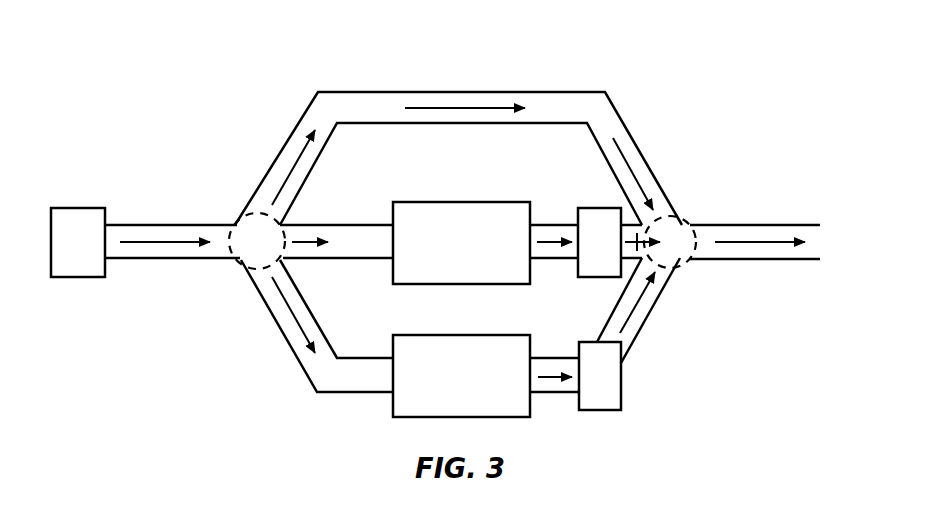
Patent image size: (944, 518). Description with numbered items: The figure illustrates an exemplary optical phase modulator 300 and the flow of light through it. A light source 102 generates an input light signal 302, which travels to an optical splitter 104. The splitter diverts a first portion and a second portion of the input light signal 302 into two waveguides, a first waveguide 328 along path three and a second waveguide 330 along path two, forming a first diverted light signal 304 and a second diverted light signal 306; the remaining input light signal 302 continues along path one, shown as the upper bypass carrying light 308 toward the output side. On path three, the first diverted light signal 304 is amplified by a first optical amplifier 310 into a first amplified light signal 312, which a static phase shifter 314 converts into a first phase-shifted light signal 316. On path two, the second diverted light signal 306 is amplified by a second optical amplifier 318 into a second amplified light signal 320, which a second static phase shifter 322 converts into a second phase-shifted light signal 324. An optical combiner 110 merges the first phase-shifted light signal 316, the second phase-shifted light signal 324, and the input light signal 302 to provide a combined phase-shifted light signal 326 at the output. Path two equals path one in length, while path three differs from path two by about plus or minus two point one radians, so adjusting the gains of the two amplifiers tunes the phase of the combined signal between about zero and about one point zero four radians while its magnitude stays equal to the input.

The optical phase modulator 300 is at (668, 38).
The light source 102 is at (76, 208).
The input light signal 302 is at (158, 239).
The optical splitter 104 is at (240, 263).
The path 1 bypass light 308 is at (432, 105).
The second diverted light signal 306 is at (308, 245).
The second waveguide 330 is at (360, 258).
The second optical amplifier 318 is at (413, 202).
The second amplified light signal 320 is at (553, 260).
The second static phase shifter 322 is at (588, 208).
The second phase-shifted light signal 324 is at (642, 243).
The optical combiner 110 is at (681, 222).
The combined phase-shifted light signal 326 is at (765, 242).
The first diverted light signal 304 is at (290, 312).
The first waveguide 328 is at (310, 388).
The first optical amplifier 310 is at (393, 348).
The first amplified light signal 312 is at (552, 385).
The static phase shifter 314 is at (610, 412).
The first phase-shifted light signal 316 is at (632, 313).